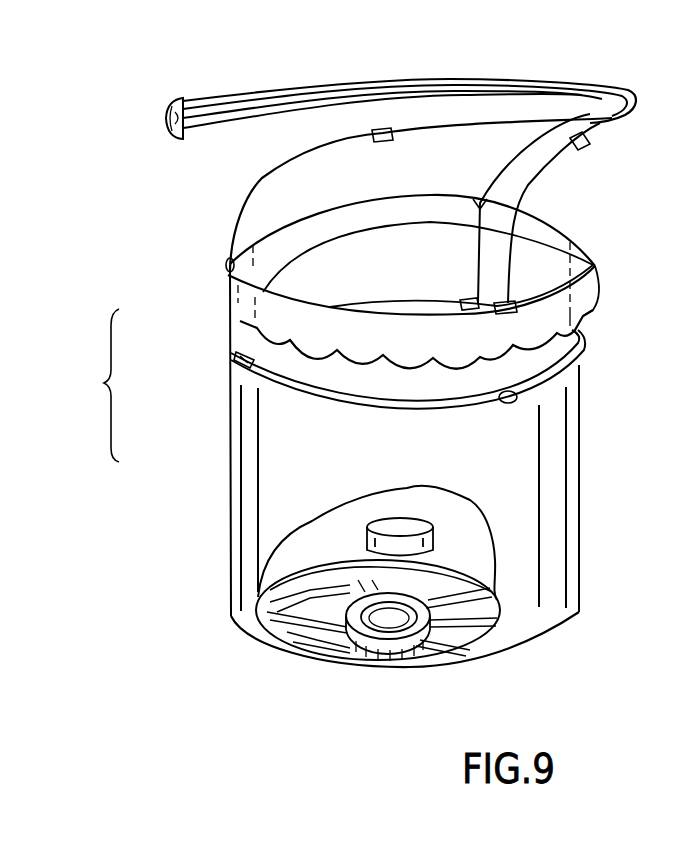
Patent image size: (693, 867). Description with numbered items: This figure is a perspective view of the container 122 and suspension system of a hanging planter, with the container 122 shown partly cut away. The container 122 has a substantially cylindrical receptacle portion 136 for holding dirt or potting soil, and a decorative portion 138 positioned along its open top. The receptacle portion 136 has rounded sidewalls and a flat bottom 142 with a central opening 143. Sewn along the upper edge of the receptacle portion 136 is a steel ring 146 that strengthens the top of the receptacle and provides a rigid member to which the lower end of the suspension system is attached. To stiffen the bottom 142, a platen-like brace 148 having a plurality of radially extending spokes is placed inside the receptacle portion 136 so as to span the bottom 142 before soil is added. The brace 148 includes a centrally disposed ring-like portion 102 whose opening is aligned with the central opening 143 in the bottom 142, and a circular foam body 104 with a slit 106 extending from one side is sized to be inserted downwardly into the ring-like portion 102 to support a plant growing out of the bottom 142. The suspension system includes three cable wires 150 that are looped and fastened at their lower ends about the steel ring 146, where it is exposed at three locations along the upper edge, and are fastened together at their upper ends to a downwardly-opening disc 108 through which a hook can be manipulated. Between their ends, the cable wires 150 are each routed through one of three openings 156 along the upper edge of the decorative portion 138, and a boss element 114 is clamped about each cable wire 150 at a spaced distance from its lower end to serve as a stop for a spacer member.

The ring-like portion 102 is at (348, 645).
The circular foam body 104 is at (365, 538).
The slit 106 is at (410, 513).
The downwardly-opening disc 108 is at (176, 97).
The boss element 114 is at (374, 135).
The container 122 is at (87, 385).
The receptacle portion 136 is at (550, 467).
The decorative portion 138 is at (246, 313).
The flat bottom 142 is at (476, 653).
The central opening 143 is at (404, 625).
The steel ring 146 is at (470, 298).
The platen-like brace 148 is at (268, 637).
The cable wire 150 is at (322, 104).
The opening 156 is at (228, 268).